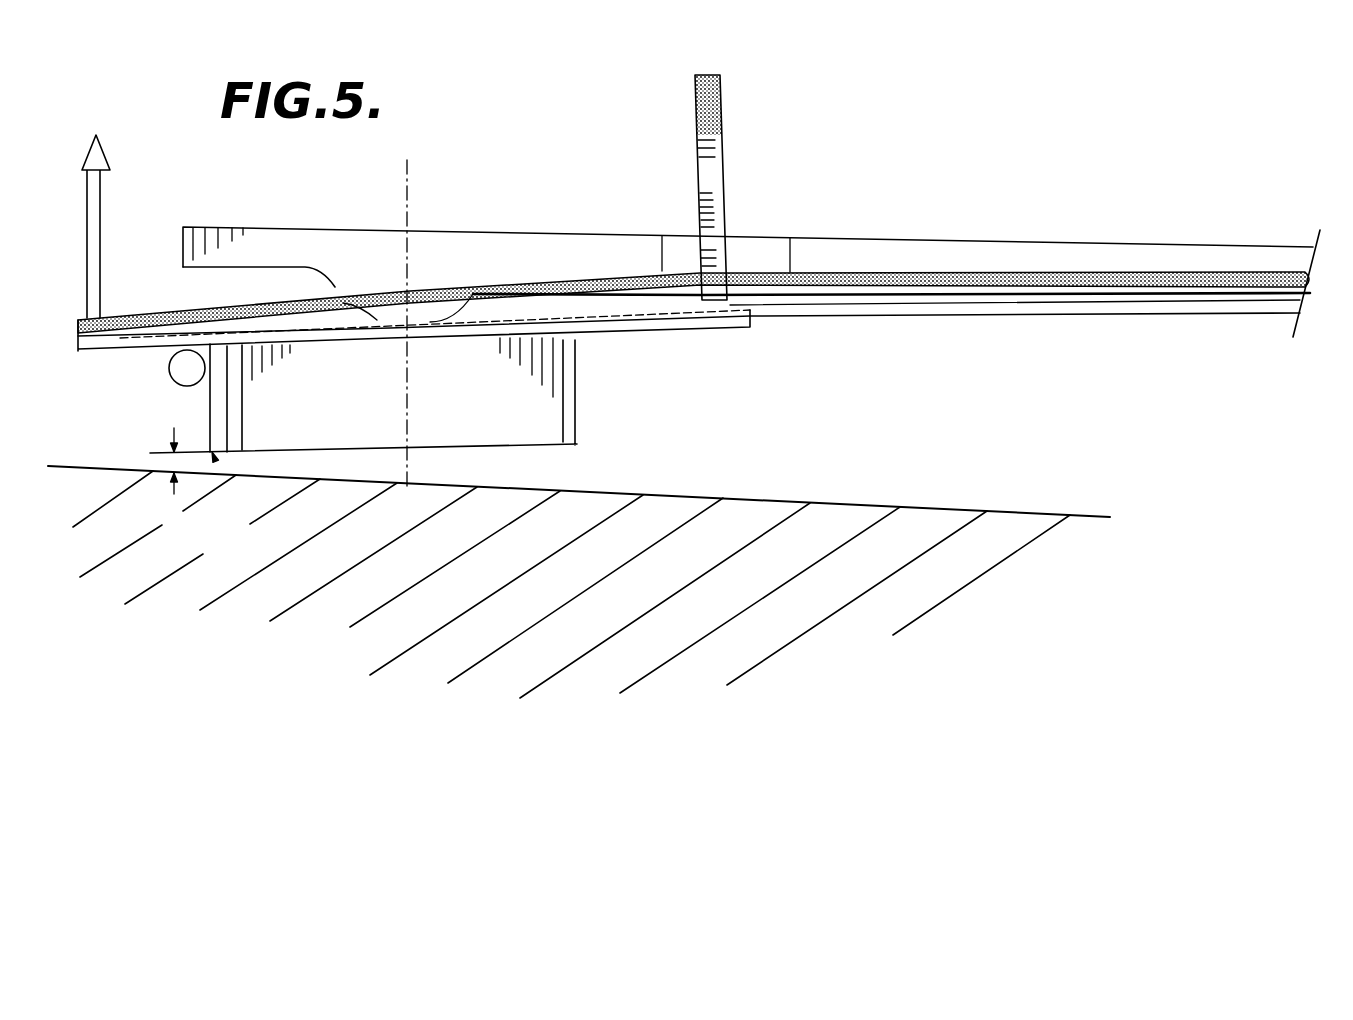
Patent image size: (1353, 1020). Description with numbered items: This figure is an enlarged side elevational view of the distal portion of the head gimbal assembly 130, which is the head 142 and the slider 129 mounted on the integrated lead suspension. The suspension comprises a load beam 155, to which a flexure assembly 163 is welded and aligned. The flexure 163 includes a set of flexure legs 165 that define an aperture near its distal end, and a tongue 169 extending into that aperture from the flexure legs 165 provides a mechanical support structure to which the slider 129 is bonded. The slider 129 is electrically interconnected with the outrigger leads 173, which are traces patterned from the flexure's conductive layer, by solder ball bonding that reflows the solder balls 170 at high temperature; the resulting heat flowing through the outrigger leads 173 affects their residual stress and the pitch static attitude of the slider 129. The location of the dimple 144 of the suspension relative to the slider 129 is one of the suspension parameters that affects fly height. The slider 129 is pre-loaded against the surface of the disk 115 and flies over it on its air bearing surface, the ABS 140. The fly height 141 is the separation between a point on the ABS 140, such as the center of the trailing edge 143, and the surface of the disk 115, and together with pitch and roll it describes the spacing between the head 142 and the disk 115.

The head gimbal assembly 130 is at (1147, 183).
The load beam 155 is at (920, 250).
The outrigger leads 173 is at (593, 280).
The dimple 144 is at (333, 284).
The flexure assembly 163 is at (1282, 308).
The flexure legs 165 is at (917, 318).
The tongue 169 is at (683, 333).
The solder balls 170 is at (169, 368).
The head 142 is at (215, 395).
The fly height 141 is at (200, 484).
The trailing edge 143 is at (212, 452).
The air bearing surface 140 is at (505, 450).
The slider 129 is at (532, 385).
The disk 115 is at (888, 503).